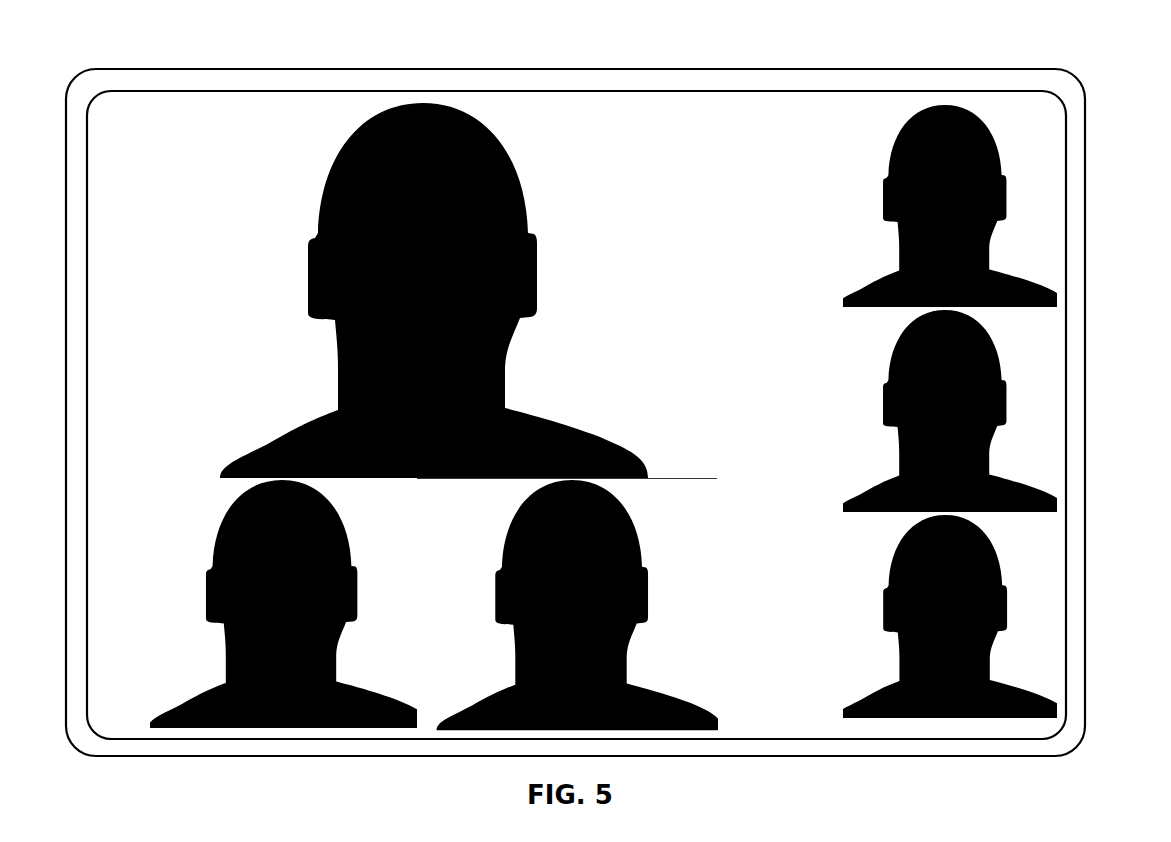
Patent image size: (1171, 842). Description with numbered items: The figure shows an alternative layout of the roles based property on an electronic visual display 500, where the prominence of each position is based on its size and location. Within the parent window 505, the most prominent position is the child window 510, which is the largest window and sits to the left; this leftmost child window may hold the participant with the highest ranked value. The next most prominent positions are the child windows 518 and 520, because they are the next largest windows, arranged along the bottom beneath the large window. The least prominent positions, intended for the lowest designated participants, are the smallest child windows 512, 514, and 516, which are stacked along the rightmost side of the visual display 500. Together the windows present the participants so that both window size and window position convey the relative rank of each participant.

The electronic visual display 500 is at (185, 753).
The parent window 505 is at (117, 113).
The child window 510 is at (519, 117).
The child window 512 is at (897, 115).
The child window 514 is at (1047, 455).
The child window 516 is at (1042, 655).
The child window 518 is at (720, 721).
The child window 520 is at (387, 677).